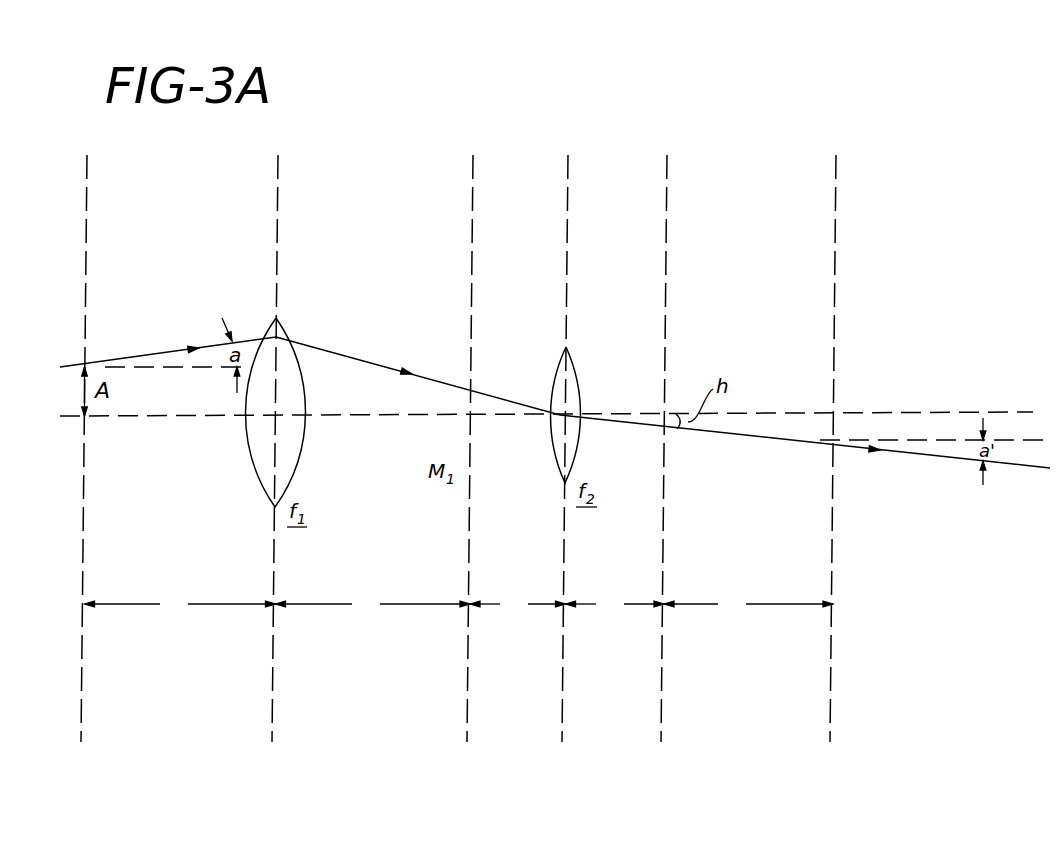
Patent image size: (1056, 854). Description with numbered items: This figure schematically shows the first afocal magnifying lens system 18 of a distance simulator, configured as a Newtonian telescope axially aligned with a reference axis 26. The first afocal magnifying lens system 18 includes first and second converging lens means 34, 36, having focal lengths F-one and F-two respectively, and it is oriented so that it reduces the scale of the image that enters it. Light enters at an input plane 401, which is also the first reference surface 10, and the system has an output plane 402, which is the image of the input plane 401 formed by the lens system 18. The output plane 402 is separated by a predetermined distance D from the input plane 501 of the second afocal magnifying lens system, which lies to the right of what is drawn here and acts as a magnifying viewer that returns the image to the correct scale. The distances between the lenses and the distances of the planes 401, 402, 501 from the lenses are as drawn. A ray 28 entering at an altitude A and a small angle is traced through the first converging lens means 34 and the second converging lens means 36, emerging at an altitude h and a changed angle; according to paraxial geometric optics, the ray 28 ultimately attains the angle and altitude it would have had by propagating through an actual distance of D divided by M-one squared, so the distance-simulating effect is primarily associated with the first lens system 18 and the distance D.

The first reference surface 10 is at (82, 655).
The first afocal magnifying lens system 18 is at (403, 302).
The reference axis 26 is at (395, 416).
The ray 28 is at (157, 352).
The first converging lens means 34 is at (306, 399).
The second converging lens means 36 is at (578, 380).
The input plane 401 is at (81, 715).
The output plane 402 is at (662, 701).
The input plane 501 is at (831, 703).